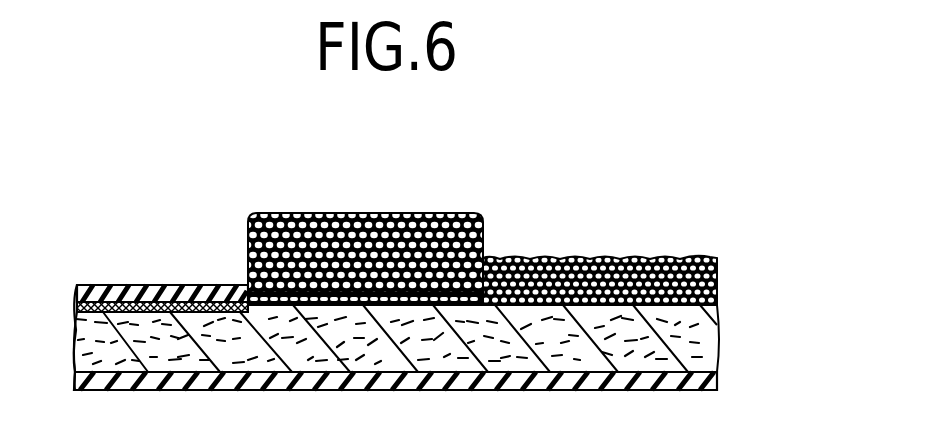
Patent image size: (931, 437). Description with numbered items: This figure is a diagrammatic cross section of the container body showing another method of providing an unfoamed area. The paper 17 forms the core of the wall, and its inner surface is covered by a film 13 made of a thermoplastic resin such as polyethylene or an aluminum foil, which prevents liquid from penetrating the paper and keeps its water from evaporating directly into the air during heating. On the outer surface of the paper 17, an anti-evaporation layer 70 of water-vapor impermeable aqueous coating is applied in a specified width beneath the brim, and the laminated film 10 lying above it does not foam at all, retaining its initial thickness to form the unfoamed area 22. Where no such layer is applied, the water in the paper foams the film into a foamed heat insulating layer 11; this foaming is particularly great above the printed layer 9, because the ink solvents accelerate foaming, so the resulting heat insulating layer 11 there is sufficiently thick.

The film 10 is at (77, 290).
The anti-evaporation layer 70 is at (107, 285).
The unfoamed area 22 is at (183, 286).
The foamed heat insulating layer 11 is at (412, 213).
The printed layer 9 is at (482, 236).
The paper 17 is at (717, 337).
The film 13 is at (718, 373).